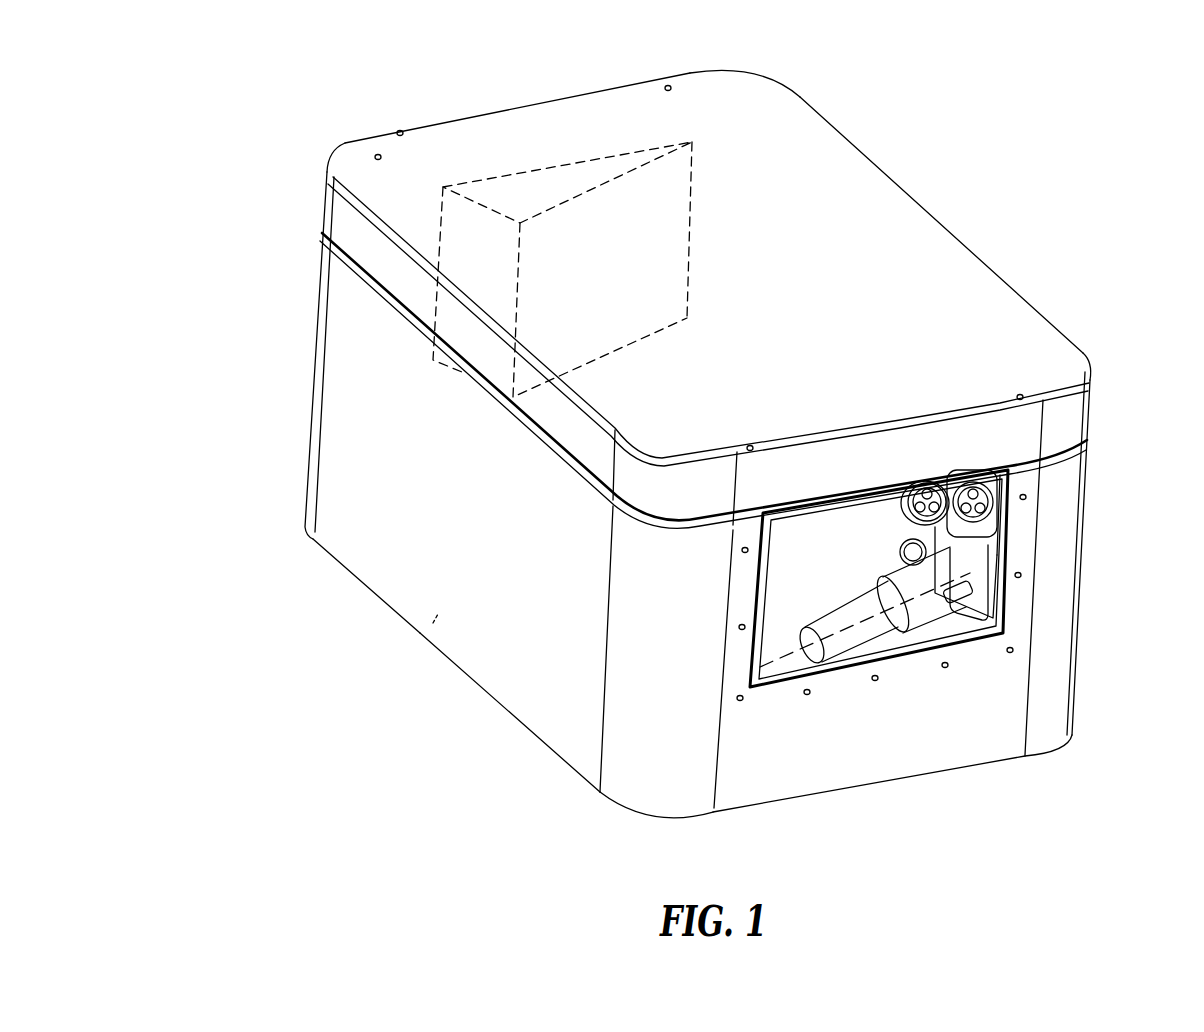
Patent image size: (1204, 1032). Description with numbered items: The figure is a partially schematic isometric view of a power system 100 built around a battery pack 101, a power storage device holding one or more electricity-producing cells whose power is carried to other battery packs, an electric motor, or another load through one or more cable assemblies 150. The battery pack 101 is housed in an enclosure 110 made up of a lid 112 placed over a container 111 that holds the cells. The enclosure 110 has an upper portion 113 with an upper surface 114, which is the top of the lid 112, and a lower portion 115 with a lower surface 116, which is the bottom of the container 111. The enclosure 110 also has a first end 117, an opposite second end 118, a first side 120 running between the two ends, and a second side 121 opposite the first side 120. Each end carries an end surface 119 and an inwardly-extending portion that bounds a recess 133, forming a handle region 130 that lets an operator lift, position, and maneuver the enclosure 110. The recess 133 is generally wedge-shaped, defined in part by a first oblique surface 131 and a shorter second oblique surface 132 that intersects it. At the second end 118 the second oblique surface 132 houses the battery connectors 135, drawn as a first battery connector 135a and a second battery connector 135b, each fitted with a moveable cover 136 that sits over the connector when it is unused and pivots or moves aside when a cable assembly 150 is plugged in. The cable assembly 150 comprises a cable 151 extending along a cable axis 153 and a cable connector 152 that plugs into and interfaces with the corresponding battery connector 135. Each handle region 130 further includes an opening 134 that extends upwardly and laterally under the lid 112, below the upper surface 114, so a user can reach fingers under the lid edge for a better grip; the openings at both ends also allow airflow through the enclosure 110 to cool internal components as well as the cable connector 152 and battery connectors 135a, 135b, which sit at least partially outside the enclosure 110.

The power system 100 is at (205, 88).
The battery pack 101 is at (240, 425).
The enclosure 110 is at (493, 683).
The container 111 is at (338, 537).
The lid 112 is at (818, 133).
The upper portion 113 is at (915, 245).
The upper surface 114 is at (1068, 367).
The lower portion 115 is at (600, 813).
The lower surface 116 is at (427, 637).
The first end 117 is at (490, 90).
The second end 118 is at (993, 740).
The end surface 119 is at (606, 132).
The first side 120 is at (1045, 258).
The second side 121 is at (348, 383).
The handle region 130 is at (637, 75).
The first oblique surface 131 is at (680, 215).
The second oblique surface 132 is at (447, 227).
The recess 133 is at (427, 168).
The opening 134 is at (530, 192).
The battery connector 135 is at (1047, 597).
The first battery connector 135a is at (1000, 550).
The second battery connector 135b is at (1000, 617).
The moveable cover 136 is at (905, 548).
The cable assembly 150 is at (880, 643).
The cable 151 is at (847, 647).
The cable connector 152 is at (913, 620).
The cable axis 153 is at (823, 627).